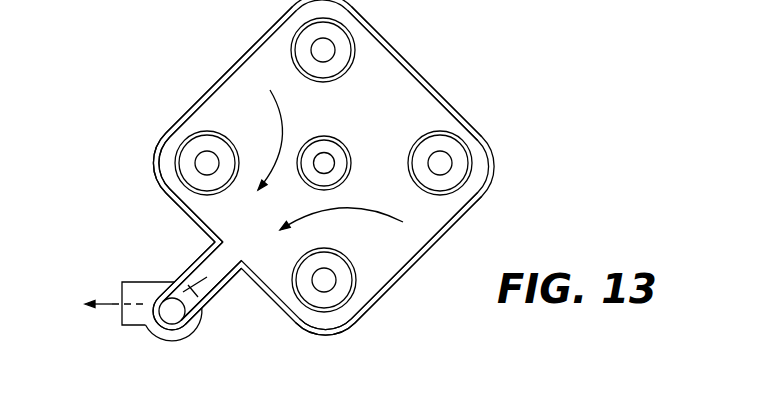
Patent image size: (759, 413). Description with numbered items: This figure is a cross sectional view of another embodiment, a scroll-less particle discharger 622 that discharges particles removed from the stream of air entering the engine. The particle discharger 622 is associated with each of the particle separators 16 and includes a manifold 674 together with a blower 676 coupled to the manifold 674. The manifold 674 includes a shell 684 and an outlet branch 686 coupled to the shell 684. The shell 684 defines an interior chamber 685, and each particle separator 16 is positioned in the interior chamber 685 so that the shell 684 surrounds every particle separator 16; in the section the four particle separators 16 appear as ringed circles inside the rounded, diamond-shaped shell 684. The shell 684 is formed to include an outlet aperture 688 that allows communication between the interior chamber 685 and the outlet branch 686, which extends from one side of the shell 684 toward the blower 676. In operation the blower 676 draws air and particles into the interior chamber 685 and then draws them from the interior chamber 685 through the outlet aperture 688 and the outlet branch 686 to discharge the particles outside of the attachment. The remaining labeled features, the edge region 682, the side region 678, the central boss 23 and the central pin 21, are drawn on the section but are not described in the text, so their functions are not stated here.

The scroll-less particle discharger 622 is at (482, 82).
The manifold 674 is at (205, 72).
The interior chamber 685 is at (450, 125).
The shell 684 is at (430, 248).
The bottom corner 682 is at (302, 338).
The left side wall 678 is at (217, 218).
The outlet branch 686 is at (219, 290).
The outlet aperture 688 is at (240, 267).
The blower 676 is at (168, 343).
The particle separator 16 is at (357, 62).
The central boss 23 is at (331, 138).
The central pin 21 is at (330, 160).